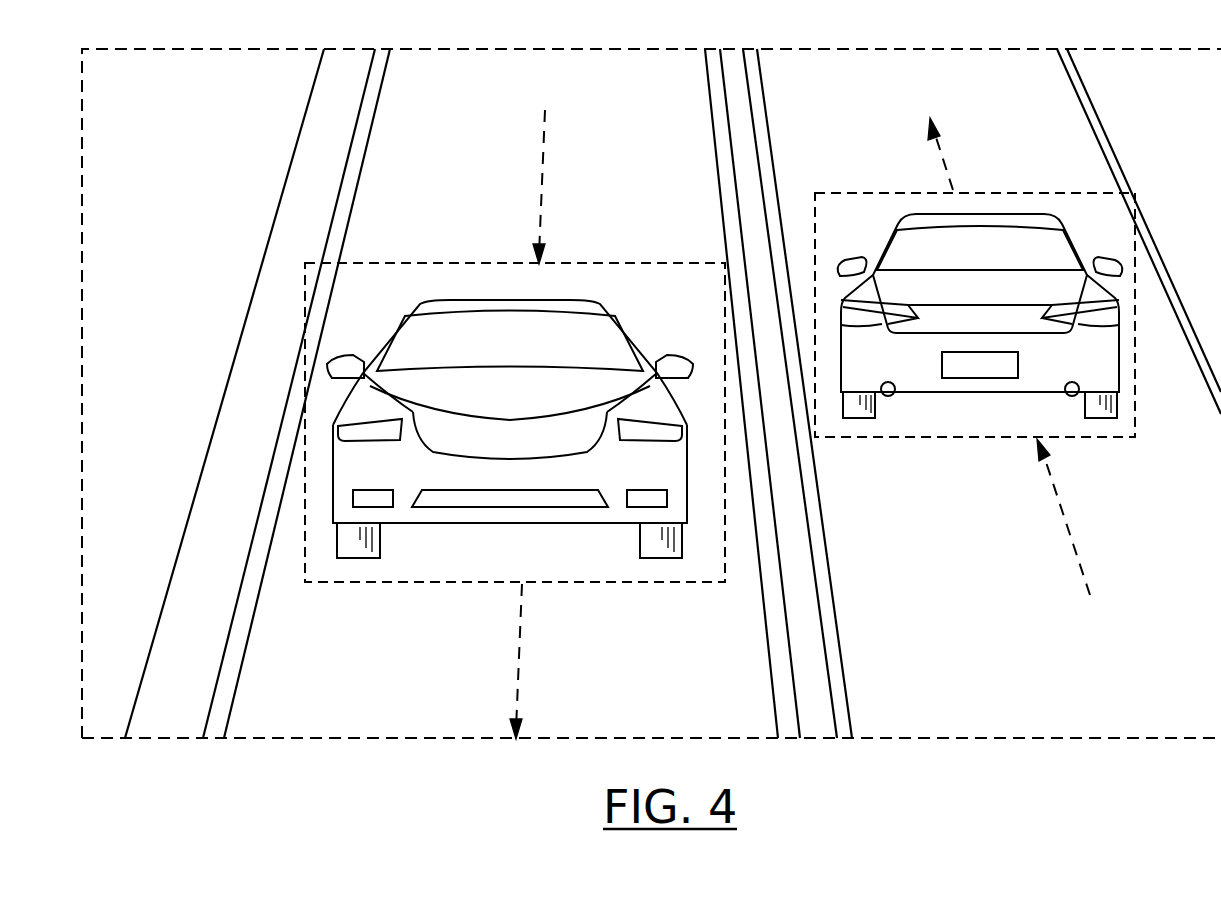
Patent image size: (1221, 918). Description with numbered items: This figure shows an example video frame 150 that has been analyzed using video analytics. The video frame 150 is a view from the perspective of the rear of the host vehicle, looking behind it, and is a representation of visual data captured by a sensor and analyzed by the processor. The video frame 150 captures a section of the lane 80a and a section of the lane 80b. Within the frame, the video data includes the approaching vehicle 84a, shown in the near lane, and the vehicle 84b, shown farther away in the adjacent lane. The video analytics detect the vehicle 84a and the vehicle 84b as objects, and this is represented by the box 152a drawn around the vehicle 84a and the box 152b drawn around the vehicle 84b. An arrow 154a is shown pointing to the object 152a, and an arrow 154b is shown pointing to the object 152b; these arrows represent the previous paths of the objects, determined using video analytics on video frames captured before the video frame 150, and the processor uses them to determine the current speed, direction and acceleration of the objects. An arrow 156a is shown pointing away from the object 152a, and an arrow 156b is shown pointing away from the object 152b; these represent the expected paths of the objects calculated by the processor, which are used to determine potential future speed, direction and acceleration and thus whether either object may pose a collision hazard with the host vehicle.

The video frame 150 is at (192, 48).
The lane 80a is at (562, 101).
The lane 80b is at (943, 101).
The approaching vehicle 84a is at (423, 303).
The vehicle 84b is at (892, 228).
The box 152a is at (453, 263).
The box 152b is at (900, 193).
The arrow 154a is at (547, 176).
The arrow 154b is at (1071, 537).
The arrow 156a is at (519, 675).
The arrow 156b is at (944, 162).